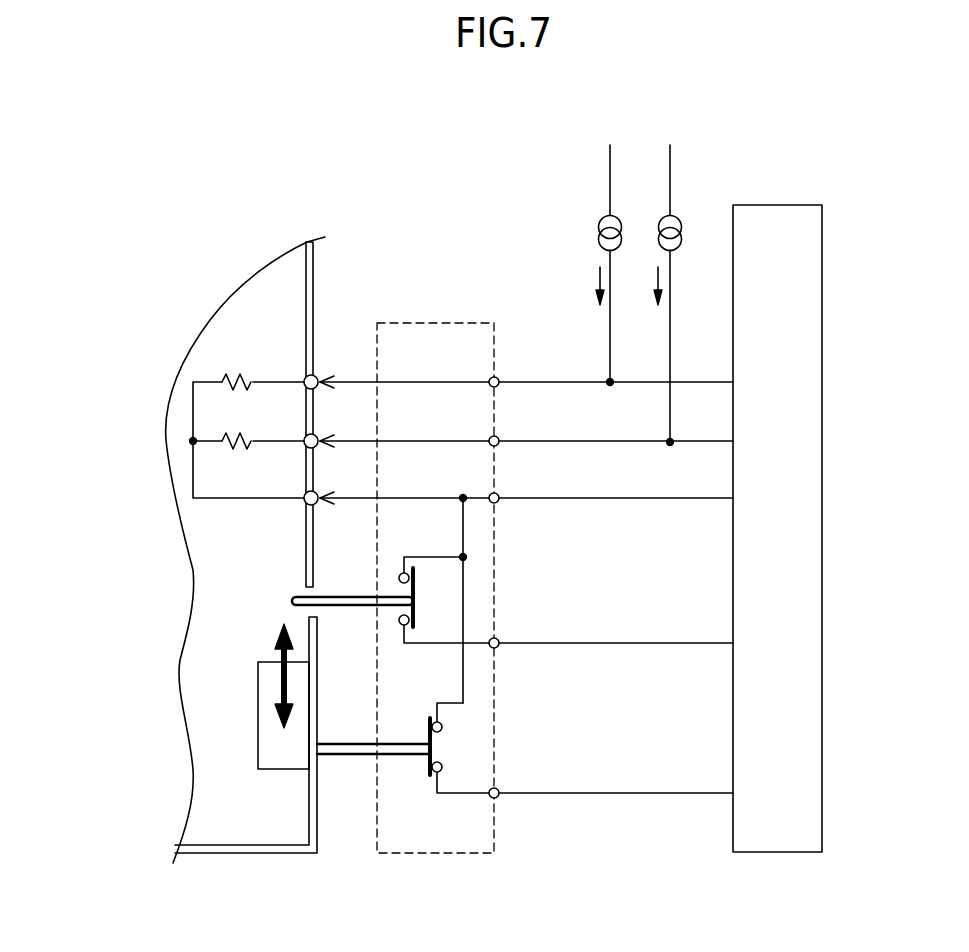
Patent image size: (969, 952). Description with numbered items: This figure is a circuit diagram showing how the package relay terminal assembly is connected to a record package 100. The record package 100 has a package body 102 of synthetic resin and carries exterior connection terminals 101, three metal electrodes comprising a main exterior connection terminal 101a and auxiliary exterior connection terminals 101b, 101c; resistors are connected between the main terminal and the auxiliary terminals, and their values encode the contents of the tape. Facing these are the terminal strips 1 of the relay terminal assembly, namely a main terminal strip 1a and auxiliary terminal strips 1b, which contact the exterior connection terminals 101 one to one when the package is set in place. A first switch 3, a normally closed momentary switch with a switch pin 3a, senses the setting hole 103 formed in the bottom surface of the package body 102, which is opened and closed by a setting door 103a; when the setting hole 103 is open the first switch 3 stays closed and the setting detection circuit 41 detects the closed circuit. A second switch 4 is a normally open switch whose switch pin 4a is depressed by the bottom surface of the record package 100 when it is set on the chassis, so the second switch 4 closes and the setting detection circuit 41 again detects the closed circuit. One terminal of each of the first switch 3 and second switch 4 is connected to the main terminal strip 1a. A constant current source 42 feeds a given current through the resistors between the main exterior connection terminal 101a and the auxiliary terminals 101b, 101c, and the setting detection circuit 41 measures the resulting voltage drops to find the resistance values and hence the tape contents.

The terminal strips 1 is at (465, 223).
The main terminal strip 1a is at (360, 498).
The auxiliary terminal strips 1b is at (353, 440).
The first switch 3 is at (437, 602).
The switch pin 3a is at (348, 605).
The second switch 4 is at (452, 745).
The switch pin 4a is at (352, 757).
The setting detection circuit 41 is at (783, 830).
The constant current source 42 is at (677, 218).
The record package 100 is at (257, 807).
The exterior connection terminals 101 is at (83, 392).
The main exterior connection terminal 101a is at (303, 493).
The auxiliary exterior connection terminal 101b is at (303, 452).
The auxiliary exterior connection terminal 101c is at (303, 390).
The package body 102 is at (305, 857).
The setting hole 103 is at (307, 590).
The setting door 103a is at (258, 672).